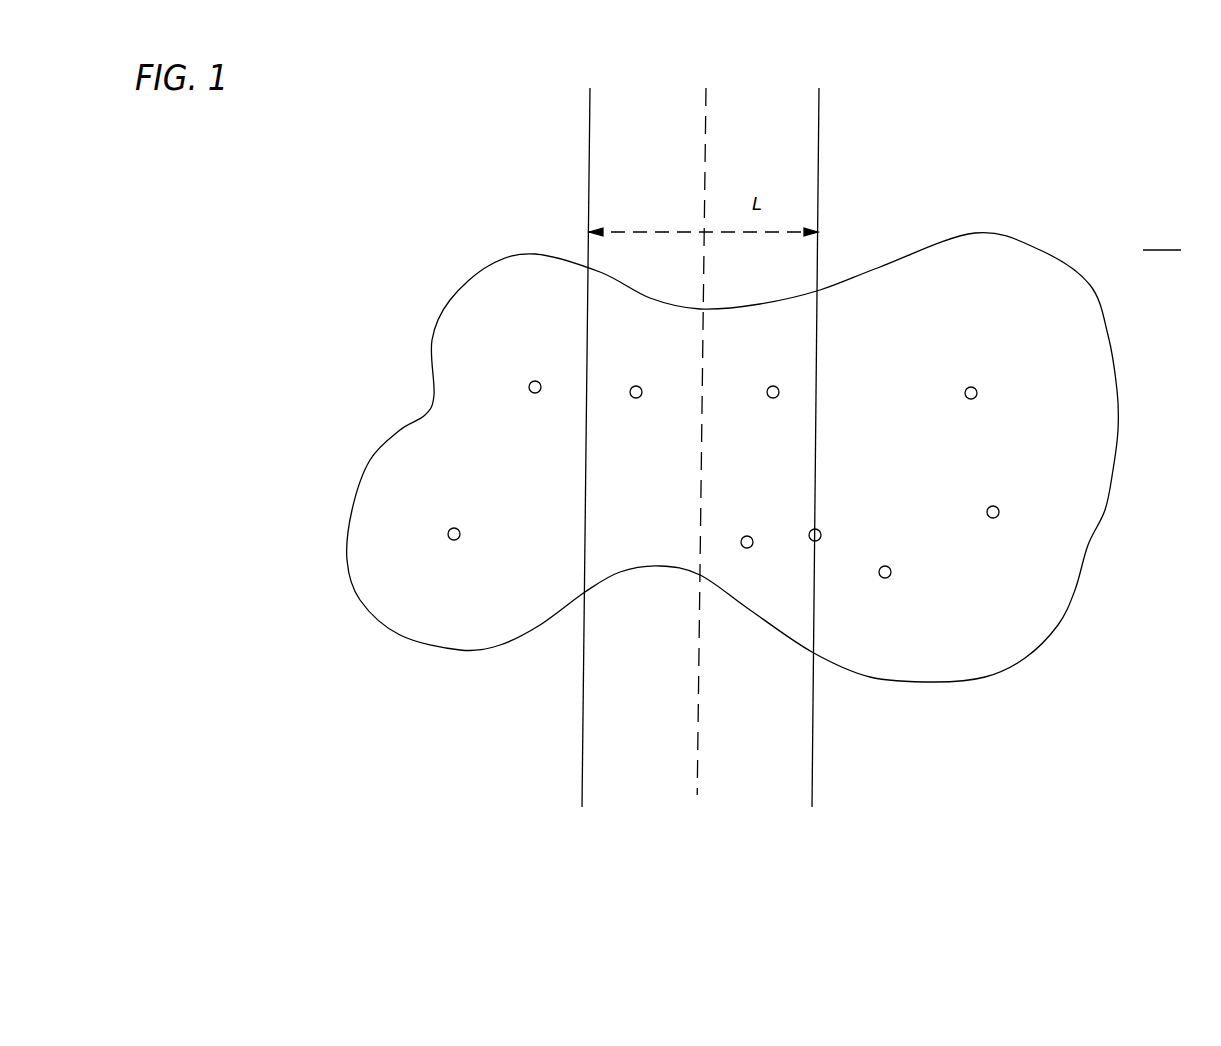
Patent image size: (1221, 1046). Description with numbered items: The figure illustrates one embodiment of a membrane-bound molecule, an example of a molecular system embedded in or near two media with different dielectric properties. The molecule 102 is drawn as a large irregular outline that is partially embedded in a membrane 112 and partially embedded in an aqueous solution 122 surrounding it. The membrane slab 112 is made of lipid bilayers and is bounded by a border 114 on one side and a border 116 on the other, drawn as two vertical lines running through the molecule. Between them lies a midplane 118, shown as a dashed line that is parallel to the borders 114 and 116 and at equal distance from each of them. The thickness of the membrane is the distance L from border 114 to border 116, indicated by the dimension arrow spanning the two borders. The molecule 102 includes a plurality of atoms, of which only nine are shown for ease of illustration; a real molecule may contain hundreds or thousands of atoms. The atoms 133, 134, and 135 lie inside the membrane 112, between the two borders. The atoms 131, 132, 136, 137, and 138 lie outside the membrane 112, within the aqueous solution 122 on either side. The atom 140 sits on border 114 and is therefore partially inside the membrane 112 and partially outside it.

The molecule 102 is at (1002, 233).
The membrane 112 is at (800, 122).
The border 114 is at (820, 158).
The border 116 is at (589, 196).
The midplane 118 is at (707, 110).
The aqueous solution 122 is at (1162, 238).
The atom 131 is at (448, 540).
The atom 132 is at (528, 386).
The atom 133 is at (629, 386).
The atom 134 is at (779, 387).
The atom 135 is at (750, 548).
The atom 136 is at (888, 578).
The atom 137 is at (998, 517).
The atom 138 is at (978, 396).
The atom 140 is at (818, 541).